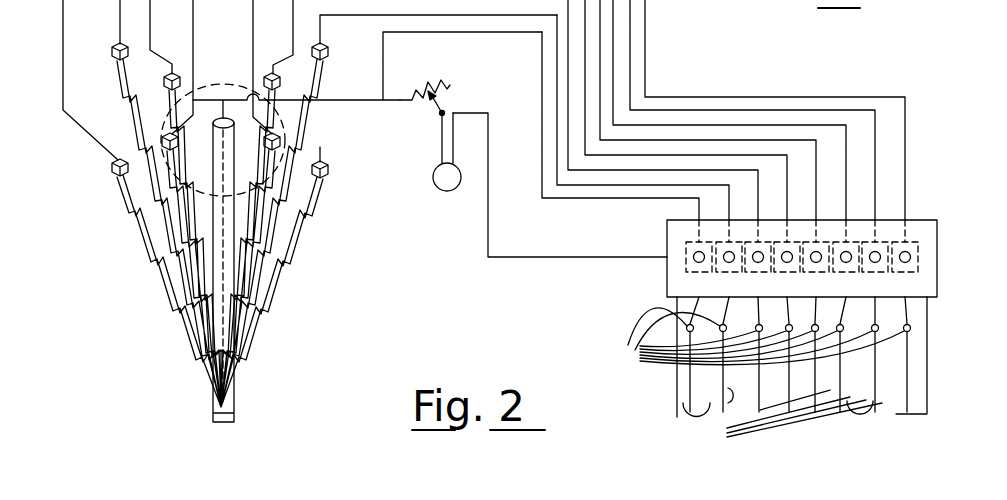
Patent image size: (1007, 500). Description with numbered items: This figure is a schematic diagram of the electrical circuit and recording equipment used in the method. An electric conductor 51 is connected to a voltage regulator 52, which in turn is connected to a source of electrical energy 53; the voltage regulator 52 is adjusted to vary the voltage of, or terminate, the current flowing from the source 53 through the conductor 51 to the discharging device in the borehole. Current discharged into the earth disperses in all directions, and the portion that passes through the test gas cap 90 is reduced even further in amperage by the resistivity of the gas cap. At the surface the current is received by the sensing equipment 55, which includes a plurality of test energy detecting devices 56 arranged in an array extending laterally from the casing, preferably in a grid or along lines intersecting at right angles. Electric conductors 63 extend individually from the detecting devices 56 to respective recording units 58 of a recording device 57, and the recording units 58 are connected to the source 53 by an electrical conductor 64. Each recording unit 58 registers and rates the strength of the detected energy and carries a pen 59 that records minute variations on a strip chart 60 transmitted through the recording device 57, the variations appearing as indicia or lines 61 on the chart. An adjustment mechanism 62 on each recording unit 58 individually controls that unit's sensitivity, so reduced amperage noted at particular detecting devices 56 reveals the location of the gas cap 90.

The electric conductor 51 is at (223, 277).
The voltage regulator 52 is at (430, 82).
The source of electrical energy 53 is at (446, 191).
The sensing equipment 55 is at (682, 82).
The test energy detecting devices 56 is at (112, 165).
The recording device 57 is at (918, 220).
The recording units 58 is at (906, 242).
The pen 59 is at (758, 337).
The strip chart 60 is at (896, 414).
The indicia or lines 61 is at (906, 365).
The adjustment mechanism 62 is at (902, 262).
The electric conductors 63 is at (618, 186).
The electrical conductor 64 is at (563, 259).
The test gas cap 90 is at (237, 82).